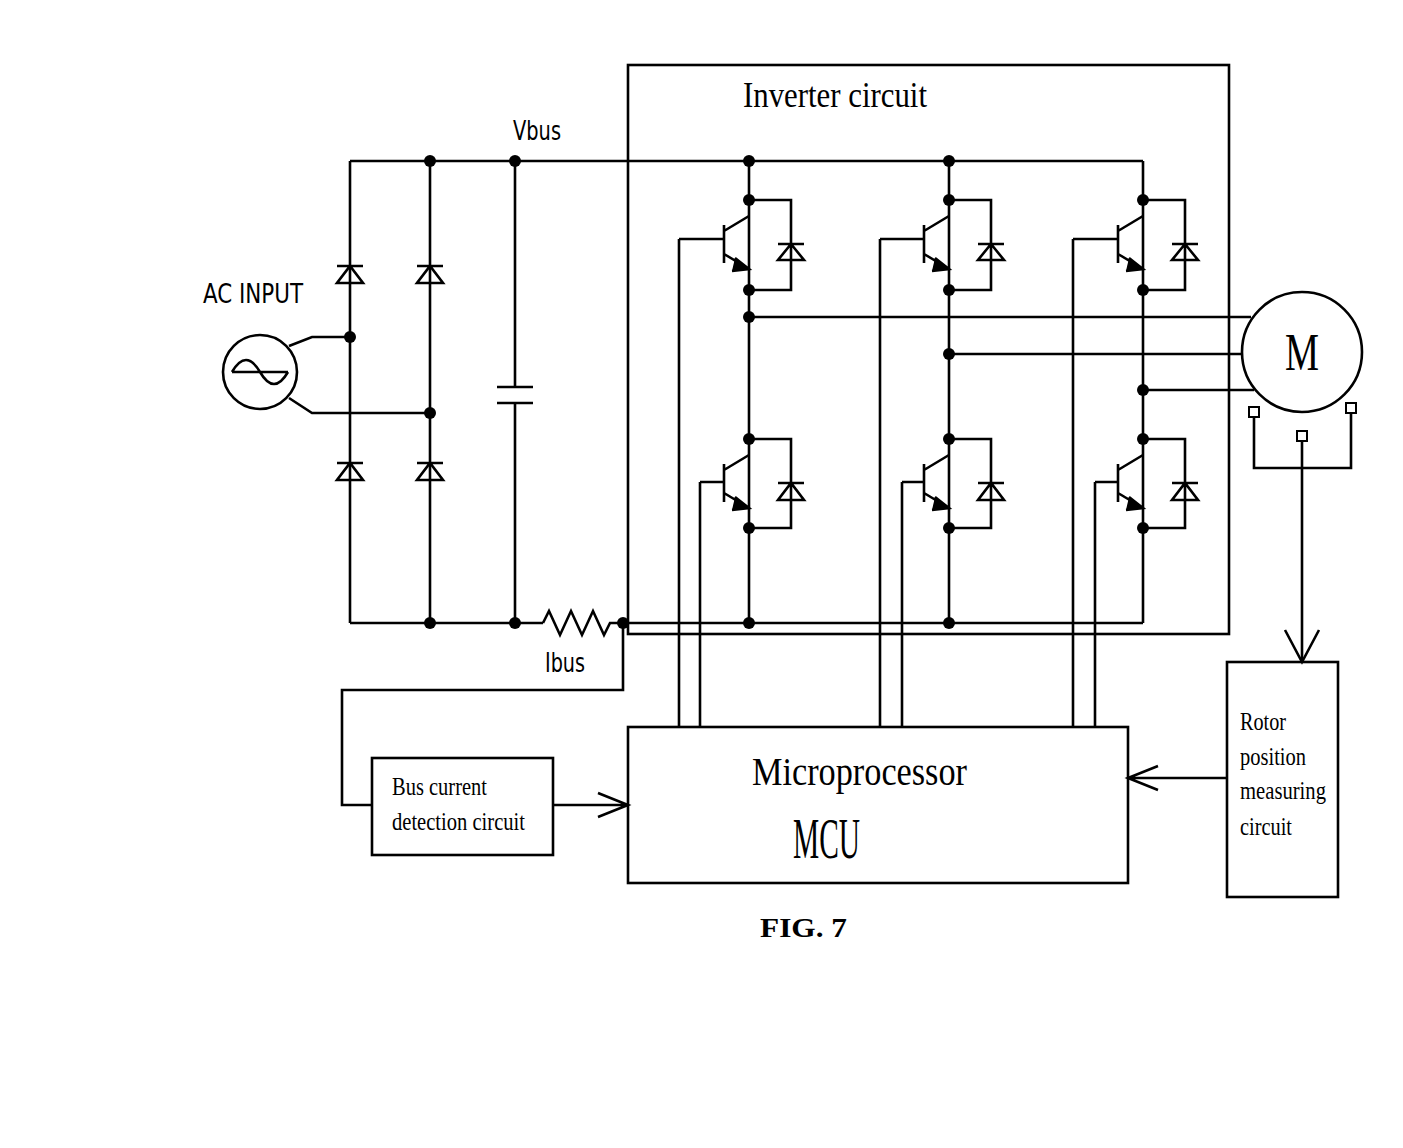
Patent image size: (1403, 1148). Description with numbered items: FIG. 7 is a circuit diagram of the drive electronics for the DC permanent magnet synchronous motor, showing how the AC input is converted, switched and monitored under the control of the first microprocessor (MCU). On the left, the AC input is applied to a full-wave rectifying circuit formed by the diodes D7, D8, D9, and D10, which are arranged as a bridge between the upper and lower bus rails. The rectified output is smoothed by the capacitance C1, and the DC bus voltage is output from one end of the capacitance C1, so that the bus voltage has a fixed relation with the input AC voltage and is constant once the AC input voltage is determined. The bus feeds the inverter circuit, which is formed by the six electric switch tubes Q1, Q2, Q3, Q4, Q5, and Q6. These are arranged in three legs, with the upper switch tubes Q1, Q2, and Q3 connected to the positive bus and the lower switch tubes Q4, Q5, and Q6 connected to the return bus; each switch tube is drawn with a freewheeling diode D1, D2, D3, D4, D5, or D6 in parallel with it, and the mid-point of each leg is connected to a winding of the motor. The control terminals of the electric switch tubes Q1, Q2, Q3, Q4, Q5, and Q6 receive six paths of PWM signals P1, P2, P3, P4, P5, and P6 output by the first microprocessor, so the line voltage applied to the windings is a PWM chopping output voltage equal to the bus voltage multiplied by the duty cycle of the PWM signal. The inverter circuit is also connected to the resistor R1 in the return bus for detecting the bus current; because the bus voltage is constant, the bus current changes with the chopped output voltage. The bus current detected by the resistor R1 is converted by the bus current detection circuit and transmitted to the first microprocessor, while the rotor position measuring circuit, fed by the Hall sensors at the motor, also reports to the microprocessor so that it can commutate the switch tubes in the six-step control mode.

The freewheeling diode D1 is at (792, 245).
The freewheeling diode D2 is at (991, 245).
The freewheeling diode D3 is at (1178, 245).
The freewheeling diode D4 is at (788, 483).
The freewheeling diode D5 is at (988, 483).
The freewheeling diode D6 is at (1182, 483).
The diode D7 is at (366, 271).
The diode D8 is at (444, 268).
The diode D9 is at (366, 471).
The diode D10 is at (448, 471).
The electric switch tube Q1 is at (714, 226).
The electric switch tube Q2 is at (914, 231).
The electric switch tube Q3 is at (1108, 228).
The electric switch tube Q4 is at (722, 464).
The electric switch tube Q5 is at (925, 464).
The electric switch tube Q6 is at (1119, 466).
The capacitance C1 is at (523, 392).
The resistor R1 is at (583, 599).
The PWM signal P1 is at (660, 483).
The PWM signal P2 is at (716, 604).
The PWM signal P3 is at (863, 483).
The PWM signal P4 is at (917, 604).
The PWM signal P5 is at (1049, 483).
The PWM signal P6 is at (1120, 604).